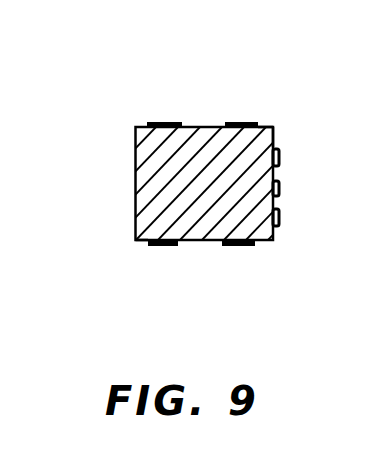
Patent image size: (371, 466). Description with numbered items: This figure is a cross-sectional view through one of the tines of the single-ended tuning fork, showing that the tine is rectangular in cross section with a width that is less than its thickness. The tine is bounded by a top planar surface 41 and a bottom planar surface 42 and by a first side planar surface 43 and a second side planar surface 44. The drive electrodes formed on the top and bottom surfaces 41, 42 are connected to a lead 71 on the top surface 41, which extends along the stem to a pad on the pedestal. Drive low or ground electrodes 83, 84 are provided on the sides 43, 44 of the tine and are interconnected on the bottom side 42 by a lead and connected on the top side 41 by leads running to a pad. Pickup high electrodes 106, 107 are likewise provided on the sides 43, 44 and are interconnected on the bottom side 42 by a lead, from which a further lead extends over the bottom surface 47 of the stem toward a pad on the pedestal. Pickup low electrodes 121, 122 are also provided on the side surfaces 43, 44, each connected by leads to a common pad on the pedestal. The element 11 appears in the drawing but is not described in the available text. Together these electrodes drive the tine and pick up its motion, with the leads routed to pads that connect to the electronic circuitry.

The bottom planar surface 42 is at (133, 176).
The pickup high electrode 107 is at (163, 122).
The pickup low electrode 122 is at (238, 122).
The pickup high electrode 106 is at (165, 247).
The pickup low electrode 121 is at (242, 247).
The drive No. 1 low or ground electrode 84 is at (282, 158).
The lead 71 is at (282, 190).
The drive No. 1 low or ground electrode 83 is at (282, 221).
The first side planar surface 43 is at (265, 128).
The top planar surface 41 is at (273, 135).
The second side planar surface 44 is at (140, 241).
The device 11 is at (364, 249).
The bottom planar surface of stem 47 is at (359, 315).